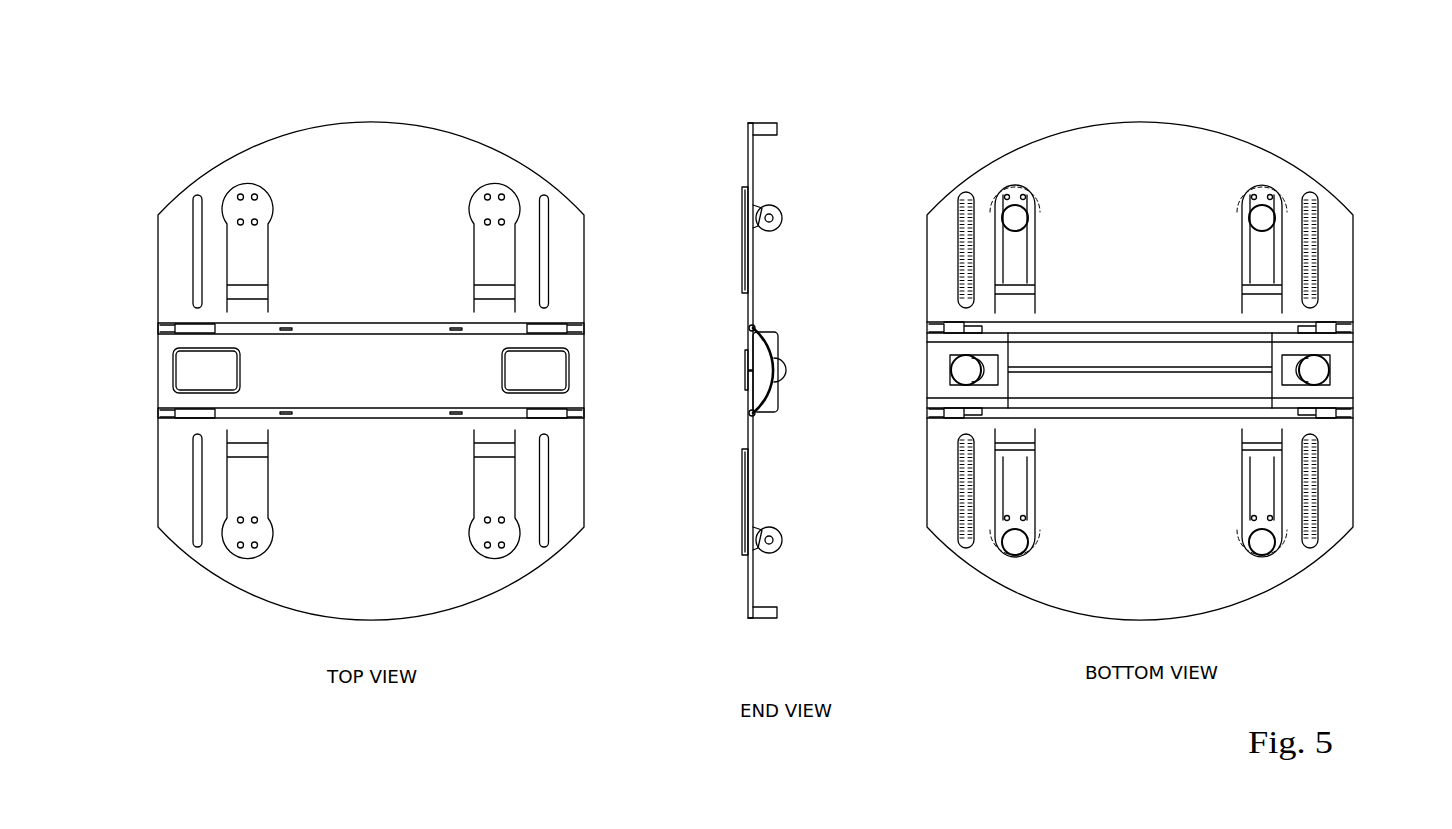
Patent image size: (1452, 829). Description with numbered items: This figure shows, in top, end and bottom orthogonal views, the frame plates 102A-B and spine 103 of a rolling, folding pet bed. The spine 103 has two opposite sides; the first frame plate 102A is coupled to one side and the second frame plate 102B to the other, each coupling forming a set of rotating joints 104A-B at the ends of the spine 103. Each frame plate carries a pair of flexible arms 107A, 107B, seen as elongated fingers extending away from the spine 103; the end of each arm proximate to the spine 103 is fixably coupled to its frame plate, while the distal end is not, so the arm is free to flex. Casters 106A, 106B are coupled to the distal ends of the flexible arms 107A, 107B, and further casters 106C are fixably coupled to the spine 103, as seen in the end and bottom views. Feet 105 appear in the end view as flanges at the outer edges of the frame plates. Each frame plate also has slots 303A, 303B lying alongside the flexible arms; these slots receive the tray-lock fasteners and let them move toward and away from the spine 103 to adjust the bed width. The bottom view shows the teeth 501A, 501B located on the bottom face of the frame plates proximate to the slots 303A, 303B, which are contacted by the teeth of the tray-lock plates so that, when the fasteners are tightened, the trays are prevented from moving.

The first frame plate 102A is at (748, 168).
The second frame plate 102B is at (748, 592).
The frame plates 102A-B is at (586, 272).
The spine 103 is at (342, 370).
The rotating joints 104A-B is at (158, 405).
The feet 105 is at (775, 126).
The caster 106A is at (777, 212).
The caster 106B is at (777, 555).
The casters 106C is at (782, 359).
The flexible arm 107A is at (488, 256).
The flexible arm 107B is at (488, 497).
The slots 303A is at (199, 195).
The slots 303B is at (200, 548).
The teeth 501A is at (958, 226).
The teeth 501B is at (953, 532).